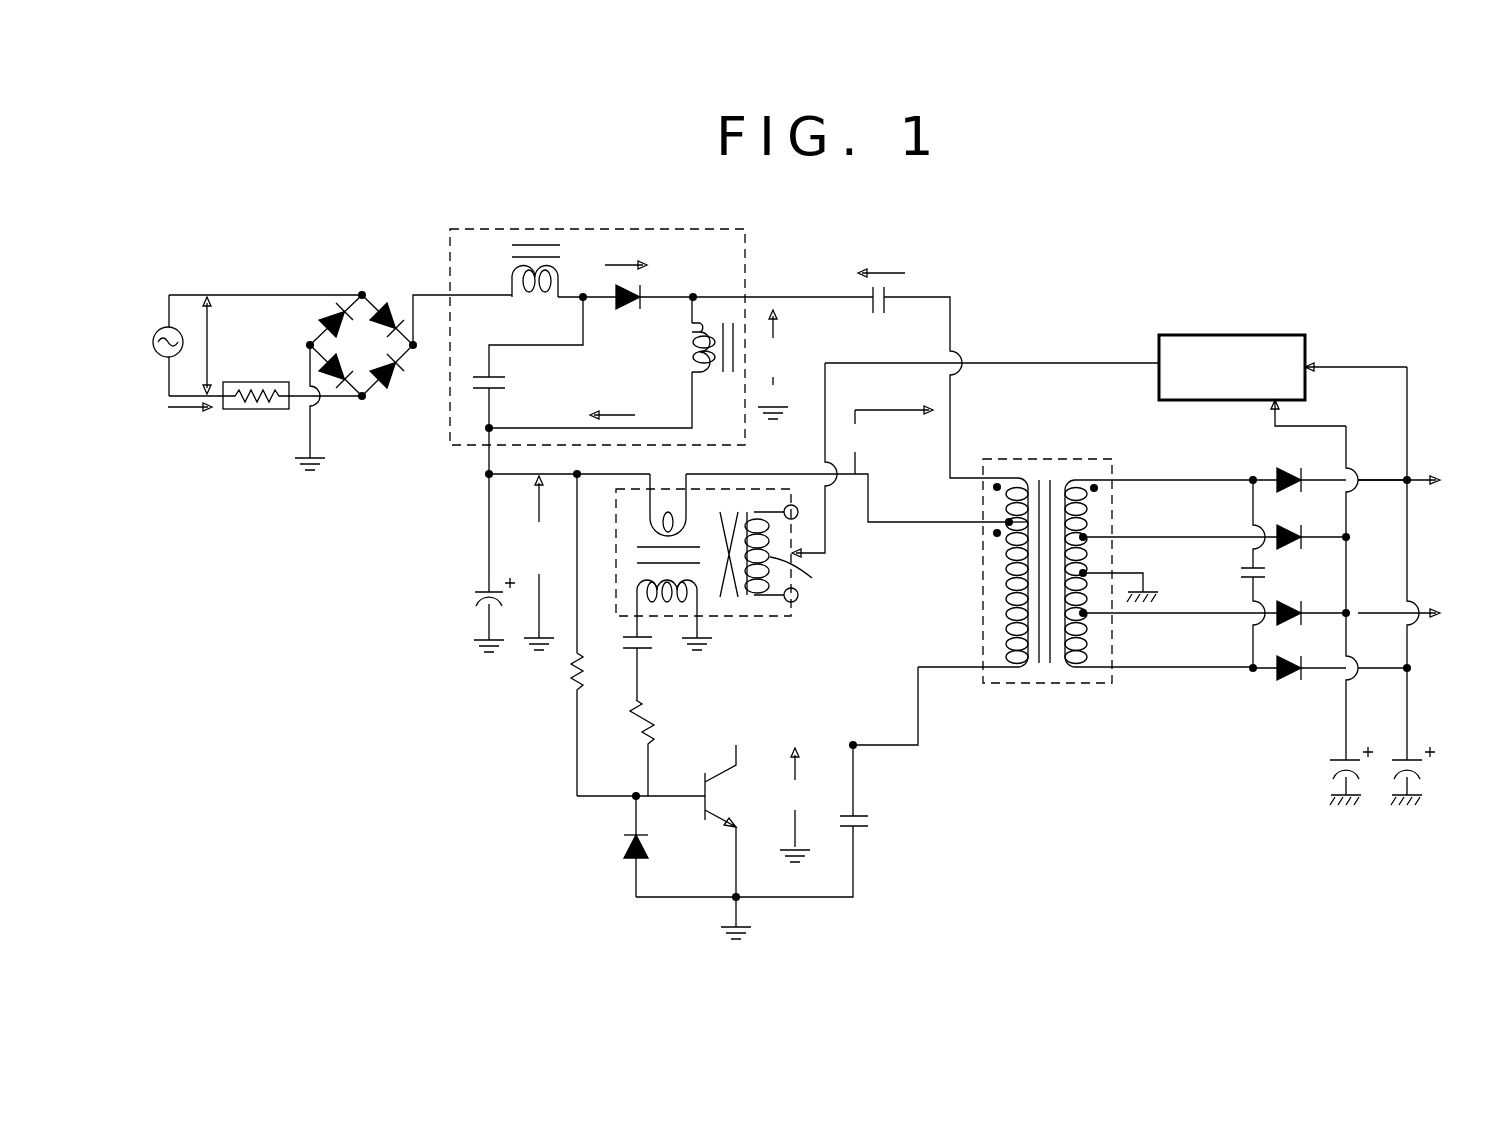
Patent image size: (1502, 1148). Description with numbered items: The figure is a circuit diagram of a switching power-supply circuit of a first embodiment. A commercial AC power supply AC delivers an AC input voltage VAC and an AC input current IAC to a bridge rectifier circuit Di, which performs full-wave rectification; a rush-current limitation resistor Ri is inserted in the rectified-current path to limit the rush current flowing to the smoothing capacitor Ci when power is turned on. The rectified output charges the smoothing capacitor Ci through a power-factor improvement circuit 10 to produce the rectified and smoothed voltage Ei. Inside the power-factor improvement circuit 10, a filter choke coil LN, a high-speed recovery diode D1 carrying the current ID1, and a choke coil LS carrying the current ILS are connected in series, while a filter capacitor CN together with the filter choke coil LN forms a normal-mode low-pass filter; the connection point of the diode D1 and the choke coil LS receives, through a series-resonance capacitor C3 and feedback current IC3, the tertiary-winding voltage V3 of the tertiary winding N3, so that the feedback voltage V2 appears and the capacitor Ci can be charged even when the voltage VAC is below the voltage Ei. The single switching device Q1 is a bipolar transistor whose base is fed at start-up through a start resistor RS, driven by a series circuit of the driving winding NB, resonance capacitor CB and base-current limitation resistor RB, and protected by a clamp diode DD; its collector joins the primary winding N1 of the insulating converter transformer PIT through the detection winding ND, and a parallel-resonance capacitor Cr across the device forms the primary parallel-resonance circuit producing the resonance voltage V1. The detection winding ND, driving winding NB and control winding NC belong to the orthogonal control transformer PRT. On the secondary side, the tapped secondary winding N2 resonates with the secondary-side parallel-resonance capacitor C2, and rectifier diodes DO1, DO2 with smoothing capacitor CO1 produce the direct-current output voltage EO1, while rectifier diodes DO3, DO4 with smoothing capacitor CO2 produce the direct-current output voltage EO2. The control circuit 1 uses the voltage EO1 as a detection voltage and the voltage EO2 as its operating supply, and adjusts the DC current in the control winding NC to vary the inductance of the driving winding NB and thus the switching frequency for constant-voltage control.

The control circuit 1 is at (1231, 335).
The power-factor improvement circuit 10 is at (607, 229).
The commercial AC power supply AC is at (155, 345).
The AC input voltage VAC is at (217, 345).
The AC input current IAC is at (189, 422).
The rush-current limitation resistor Ri is at (256, 412).
The bridge rectifier circuit Di is at (376, 356).
The filter choke coil LN is at (536, 285).
The high-speed recovery diode D1 is at (629, 315).
The current flowing in the high-speed recovery diode ID1 is at (625, 253).
The choke coil LS is at (694, 347).
The current flowing in the choke coil ILS is at (612, 400).
The filter capacitor CN is at (507, 384).
The feedback voltage V2 is at (773, 364).
The series-resonance capacitor C3 is at (895, 312).
The feedback current IC3 is at (881, 258).
The voltage of the tertiary winding V3 is at (888, 440).
The smoothing capacitor Ci is at (480, 563).
The rectified and smoothed voltage Ei is at (539, 563).
The start resistor RS is at (555, 635).
The detection winding ND is at (672, 510).
The orthogonal control transformer PRT is at (707, 568).
The control winding NC is at (811, 570).
The driving winding NB is at (665, 605).
The resonance capacitor CB is at (617, 642).
The base-current limitation resistor RB is at (622, 748).
The clamp diode DD is at (655, 846).
The switching device Q1 is at (729, 821).
The voltage V1 is at (794, 805).
The parallel-resonance capacitor Cr is at (870, 824).
The insulating converter transformer PIT is at (1047, 552).
The primary winding N1 is at (1003, 588).
The secondary winding N2 is at (1087, 506).
The tertiary winding N3 is at (1000, 497).
The rectifier diode DO1 is at (1310, 465).
The rectifier diode DO2 is at (1311, 654).
The rectifier diode DO3 is at (1311, 523).
The rectifier diode DO4 is at (1311, 599).
The secondary-side parallel-resonance capacitor C2 is at (1233, 578).
The smoothing capacitor CO1 is at (1435, 776).
The smoothing capacitor CO2 is at (1317, 776).
The direct-current output voltage EO1 is at (1424, 482).
The direct-current output voltage EO2 is at (1424, 615).